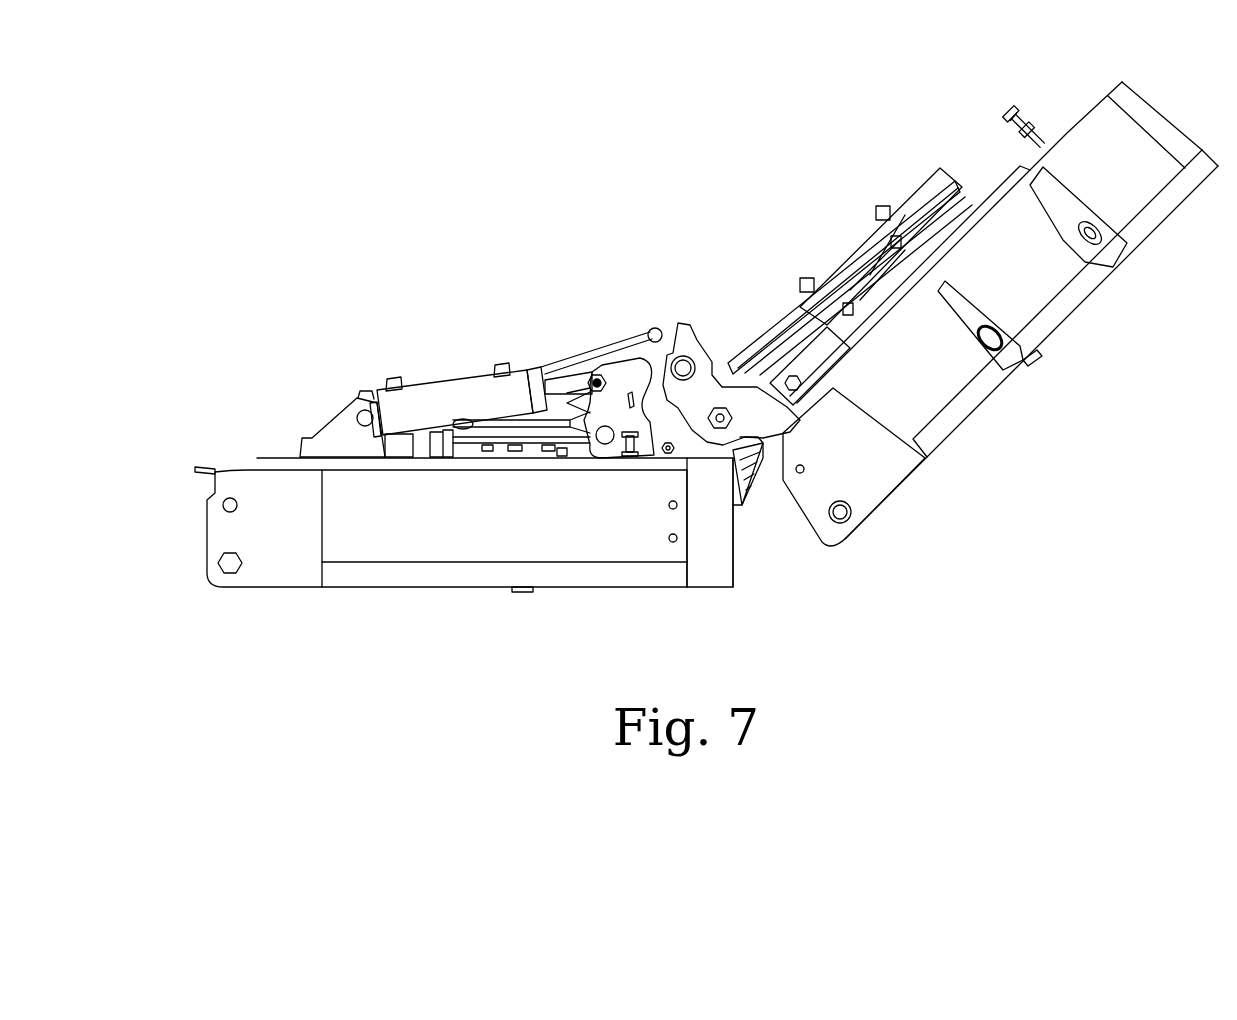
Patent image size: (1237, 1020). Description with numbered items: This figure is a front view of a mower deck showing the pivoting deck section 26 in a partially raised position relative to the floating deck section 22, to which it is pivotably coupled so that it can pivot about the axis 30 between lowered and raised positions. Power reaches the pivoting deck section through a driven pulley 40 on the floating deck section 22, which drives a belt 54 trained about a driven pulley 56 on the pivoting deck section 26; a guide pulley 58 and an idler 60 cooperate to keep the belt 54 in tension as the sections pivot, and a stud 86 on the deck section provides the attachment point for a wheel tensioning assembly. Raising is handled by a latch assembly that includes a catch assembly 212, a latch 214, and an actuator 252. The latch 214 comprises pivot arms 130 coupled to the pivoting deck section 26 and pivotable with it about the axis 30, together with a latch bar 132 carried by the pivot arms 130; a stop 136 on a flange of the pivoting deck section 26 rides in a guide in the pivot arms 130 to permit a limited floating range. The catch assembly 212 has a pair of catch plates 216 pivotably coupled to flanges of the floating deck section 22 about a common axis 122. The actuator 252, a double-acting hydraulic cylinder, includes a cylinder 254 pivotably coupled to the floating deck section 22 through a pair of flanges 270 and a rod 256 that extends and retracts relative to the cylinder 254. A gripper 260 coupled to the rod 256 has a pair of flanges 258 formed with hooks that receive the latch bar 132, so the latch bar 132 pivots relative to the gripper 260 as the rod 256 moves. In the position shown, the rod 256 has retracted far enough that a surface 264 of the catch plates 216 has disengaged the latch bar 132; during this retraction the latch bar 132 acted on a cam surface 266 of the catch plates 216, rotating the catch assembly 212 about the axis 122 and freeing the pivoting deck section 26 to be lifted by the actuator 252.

The floating deck section 22 is at (352, 607).
The pivoting deck section 26 is at (973, 305).
The axis 30 is at (736, 495).
The driven pulley 40 is at (505, 442).
The belt 54 is at (943, 166).
The driven pulley 56 is at (912, 196).
The guide pulley 58 is at (777, 330).
The idler 60 is at (823, 345).
The stud 86 is at (1032, 118).
The axis 122 is at (603, 445).
The pivot arms 130 is at (765, 440).
The latch bar 132 is at (694, 358).
The stop 136 is at (806, 469).
The catch assembly 212 is at (616, 333).
The latch 214 is at (710, 322).
The catch plates 216 is at (600, 493).
The actuator 252 is at (481, 346).
The cylinder 254 is at (425, 390).
The rod 256 is at (548, 378).
The flanges 258 is at (645, 443).
The gripper 260 is at (703, 312).
The surface 264 is at (655, 328).
The cam surface 266 is at (594, 377).
The flanges 270 is at (340, 420).